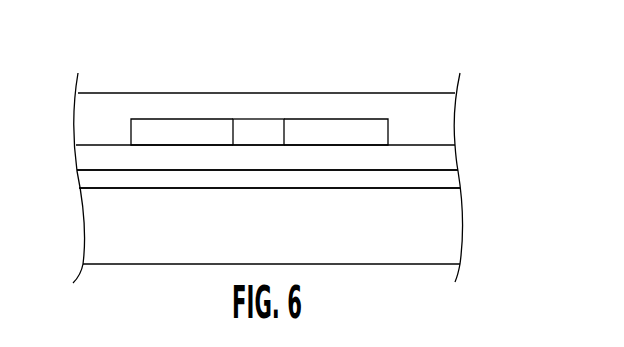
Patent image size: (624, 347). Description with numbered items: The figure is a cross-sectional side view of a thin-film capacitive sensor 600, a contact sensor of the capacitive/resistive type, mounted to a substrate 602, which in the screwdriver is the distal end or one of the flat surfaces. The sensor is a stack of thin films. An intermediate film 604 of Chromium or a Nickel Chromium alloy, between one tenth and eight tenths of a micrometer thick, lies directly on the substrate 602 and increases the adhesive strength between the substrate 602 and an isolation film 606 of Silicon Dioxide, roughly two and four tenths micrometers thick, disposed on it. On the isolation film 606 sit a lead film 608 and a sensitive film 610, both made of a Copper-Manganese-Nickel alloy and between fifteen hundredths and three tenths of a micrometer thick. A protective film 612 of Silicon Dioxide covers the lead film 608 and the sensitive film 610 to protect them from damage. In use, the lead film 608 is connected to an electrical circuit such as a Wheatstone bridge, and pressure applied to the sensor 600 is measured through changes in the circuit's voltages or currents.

The thin-film capacitive sensor 600 is at (274, 145).
The substrate 602 is at (445, 230).
The intermediate film 604 is at (455, 182).
The isolation film 606 is at (443, 162).
The lead film 608 is at (152, 135).
The sensitive film 610 is at (263, 130).
The protective film 612 is at (118, 107).